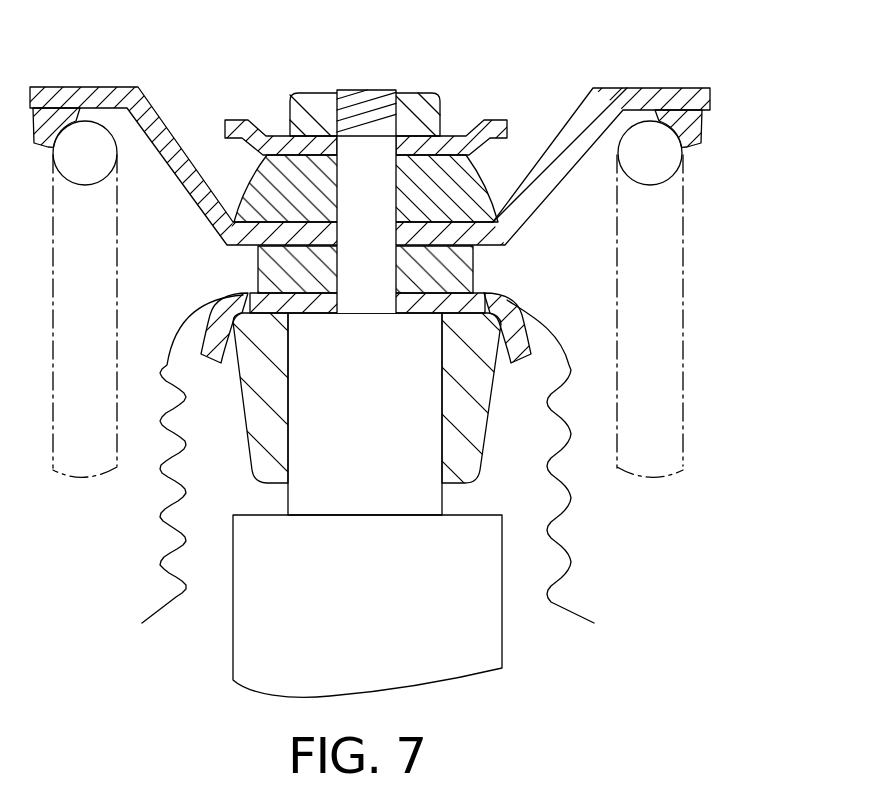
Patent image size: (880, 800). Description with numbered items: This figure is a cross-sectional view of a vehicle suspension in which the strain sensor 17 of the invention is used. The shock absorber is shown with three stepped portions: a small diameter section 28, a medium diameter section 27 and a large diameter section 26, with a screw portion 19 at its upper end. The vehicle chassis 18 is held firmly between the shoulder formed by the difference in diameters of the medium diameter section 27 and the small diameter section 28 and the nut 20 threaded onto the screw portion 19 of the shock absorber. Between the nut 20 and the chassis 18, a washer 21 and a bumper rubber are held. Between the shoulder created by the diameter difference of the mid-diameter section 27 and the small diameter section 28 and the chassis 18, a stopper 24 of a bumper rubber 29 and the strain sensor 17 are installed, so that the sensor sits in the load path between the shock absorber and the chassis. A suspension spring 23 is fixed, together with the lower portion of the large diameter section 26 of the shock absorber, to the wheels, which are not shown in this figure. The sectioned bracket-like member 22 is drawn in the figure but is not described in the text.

The strain sensor 17 is at (462, 270).
The vehicle chassis 18 is at (688, 97).
The screw portion of the shock absorber 19 is at (360, 95).
The nut 20 is at (423, 93).
The washer 21 is at (453, 147).
The bracket 22 is at (480, 197).
The suspension spring 23 is at (667, 252).
The stopper 24 is at (507, 294).
The large diameter section of the shock absorber 26 is at (485, 632).
The medium diameter section of the shock absorber 27 is at (430, 495).
The small diameter section of the shock absorber 28 is at (340, 182).
The bumper rubber 29 is at (480, 428).